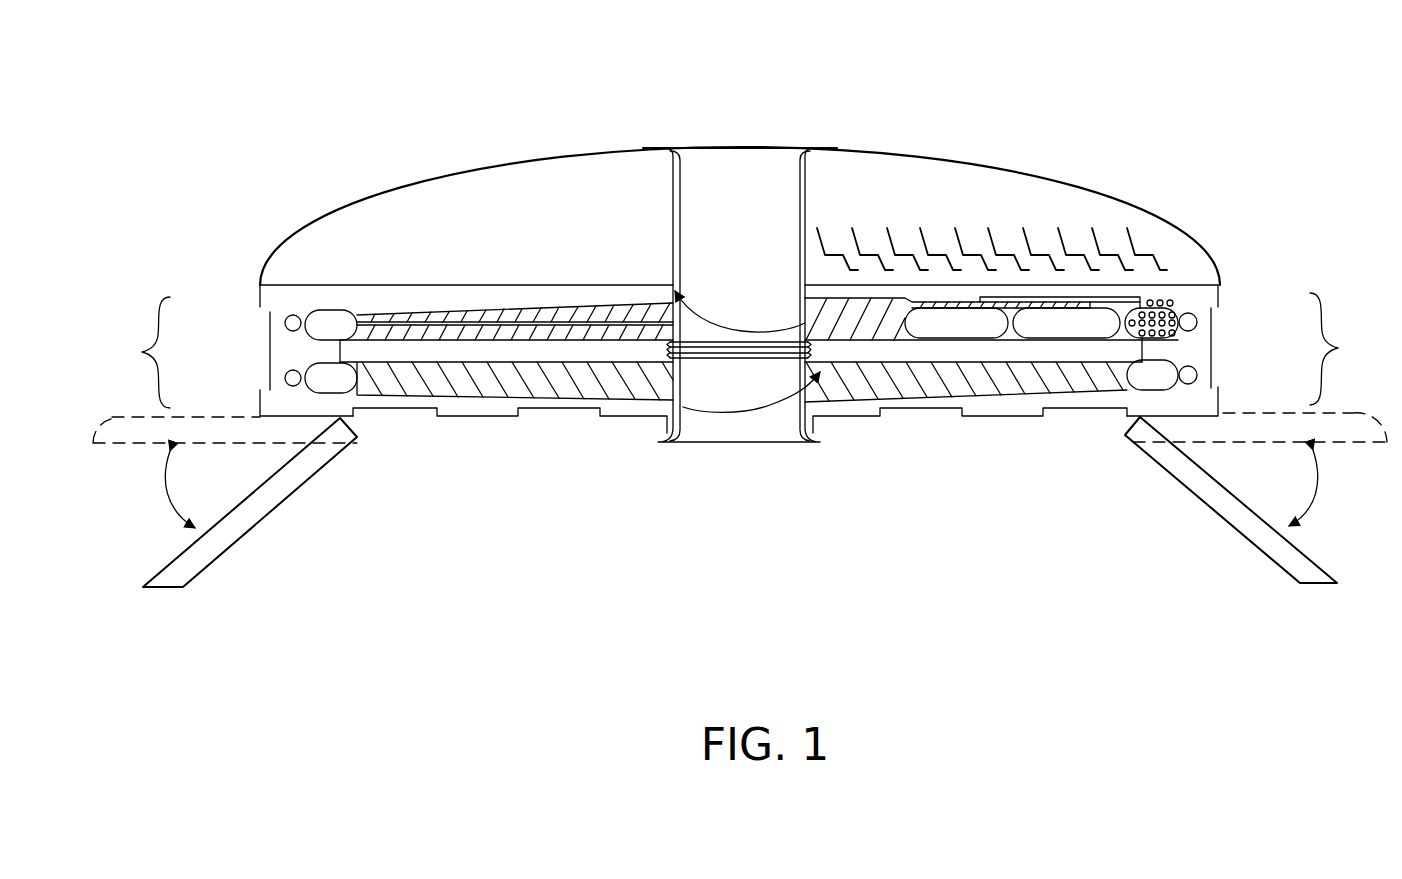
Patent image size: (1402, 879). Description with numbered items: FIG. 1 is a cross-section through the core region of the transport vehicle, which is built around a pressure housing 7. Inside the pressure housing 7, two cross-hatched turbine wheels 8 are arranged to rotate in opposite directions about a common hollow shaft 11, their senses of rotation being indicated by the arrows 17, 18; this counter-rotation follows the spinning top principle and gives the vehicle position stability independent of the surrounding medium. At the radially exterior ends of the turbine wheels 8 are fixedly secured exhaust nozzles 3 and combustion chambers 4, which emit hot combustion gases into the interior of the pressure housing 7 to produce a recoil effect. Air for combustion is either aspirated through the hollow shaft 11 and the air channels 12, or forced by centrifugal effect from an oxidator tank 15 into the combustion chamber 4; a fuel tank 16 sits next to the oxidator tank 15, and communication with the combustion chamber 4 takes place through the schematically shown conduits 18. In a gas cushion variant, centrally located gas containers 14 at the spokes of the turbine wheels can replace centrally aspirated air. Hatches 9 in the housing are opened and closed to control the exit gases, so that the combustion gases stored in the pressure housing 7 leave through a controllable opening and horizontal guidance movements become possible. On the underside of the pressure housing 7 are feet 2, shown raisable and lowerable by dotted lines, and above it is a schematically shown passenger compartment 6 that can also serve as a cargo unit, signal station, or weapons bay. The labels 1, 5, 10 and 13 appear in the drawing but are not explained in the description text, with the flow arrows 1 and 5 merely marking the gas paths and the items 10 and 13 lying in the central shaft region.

The inlet airflow 1 is at (400, 412).
The feet 2 is at (168, 492).
The exhaust nozzles 3 is at (293, 315).
The combustion chambers 4 is at (328, 318).
The outlet airflow 5 is at (753, 140).
The passenger compartment 6 is at (1020, 205).
The pressure housing 7 is at (142, 352).
The turbine wheels 8 is at (525, 370).
The hatches 9 is at (263, 318).
The bellows 10 is at (768, 363).
The shaft 11 is at (712, 200).
The air channels 12 is at (470, 311).
The inner tube wall 13 is at (688, 313).
The gas containers 14 is at (935, 342).
The oxidator tank 15 is at (952, 317).
The fuel tank 16 is at (1053, 317).
The arrow 17 is at (750, 332).
The arrow / conduits 18 is at (727, 411).